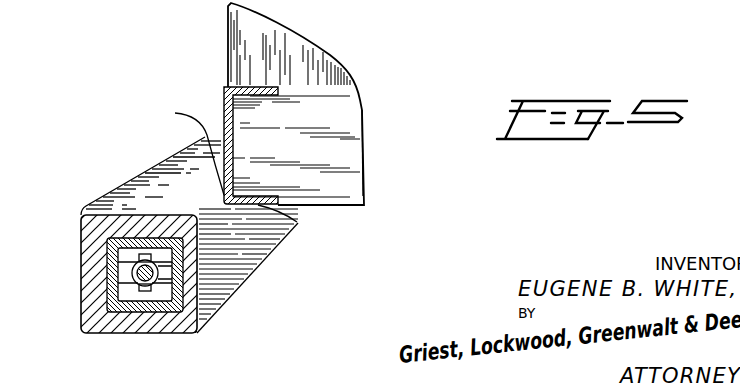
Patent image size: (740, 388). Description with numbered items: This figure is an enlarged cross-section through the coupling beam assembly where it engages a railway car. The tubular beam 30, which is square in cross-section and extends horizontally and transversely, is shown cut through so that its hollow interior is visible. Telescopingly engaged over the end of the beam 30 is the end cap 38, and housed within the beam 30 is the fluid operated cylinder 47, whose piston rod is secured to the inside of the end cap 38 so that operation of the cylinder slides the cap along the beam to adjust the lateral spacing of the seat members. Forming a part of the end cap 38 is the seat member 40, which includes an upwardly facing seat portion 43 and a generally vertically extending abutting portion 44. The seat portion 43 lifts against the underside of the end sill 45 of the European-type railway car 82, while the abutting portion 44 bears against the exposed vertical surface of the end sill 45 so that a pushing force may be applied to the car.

The tubular beam 30 is at (132, 298).
The end cap 38 is at (88, 298).
The seat member 40 is at (147, 190).
The seat portion 43 is at (290, 230).
The abutting portion 44 is at (183, 148).
The end sill 45 is at (233, 147).
The fluid operated cylinder 47 is at (131, 270).
The European-type railway car 82 is at (228, 58).